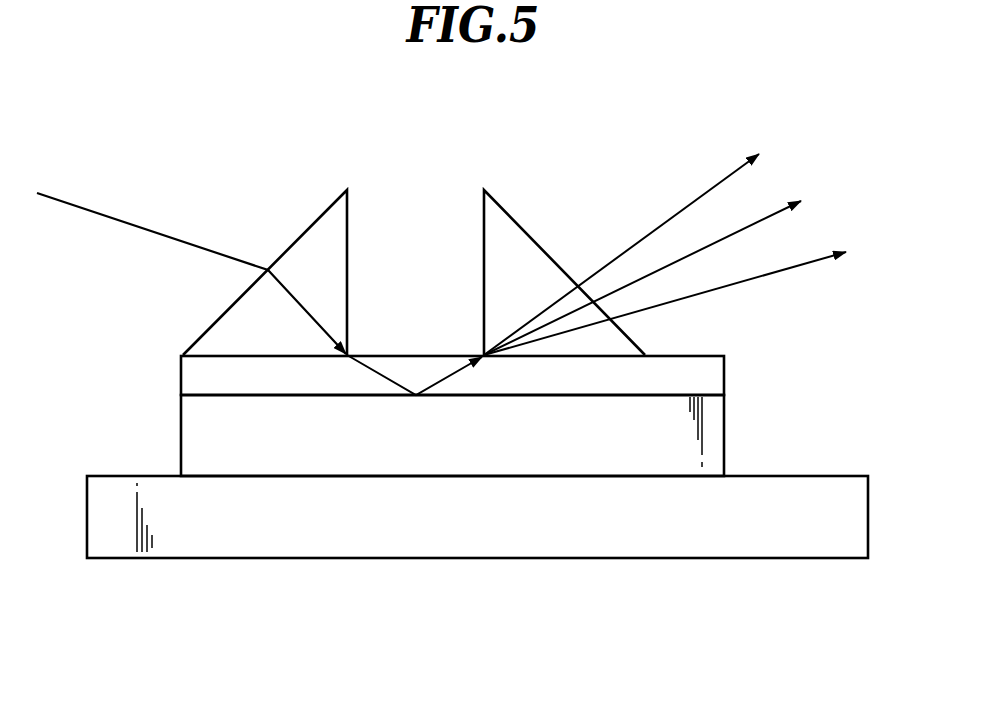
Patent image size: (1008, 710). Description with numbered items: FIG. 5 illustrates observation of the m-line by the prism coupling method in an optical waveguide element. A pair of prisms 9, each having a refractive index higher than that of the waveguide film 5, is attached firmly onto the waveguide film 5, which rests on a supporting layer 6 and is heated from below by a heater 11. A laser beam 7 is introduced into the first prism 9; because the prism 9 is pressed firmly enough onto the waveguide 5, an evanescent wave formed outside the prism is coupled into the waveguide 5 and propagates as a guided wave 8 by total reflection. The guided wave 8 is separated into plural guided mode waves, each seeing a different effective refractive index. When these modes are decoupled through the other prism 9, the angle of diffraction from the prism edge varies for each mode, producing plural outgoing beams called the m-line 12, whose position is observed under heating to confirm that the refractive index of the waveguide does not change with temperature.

The waveguide film 5 is at (710, 373).
The substrate layer 6 is at (710, 440).
The laser beam 7 is at (102, 213).
The guided wave 8 is at (442, 378).
The prism 9 is at (333, 248).
The heater 11 is at (415, 522).
The m-line 12 is at (785, 128).